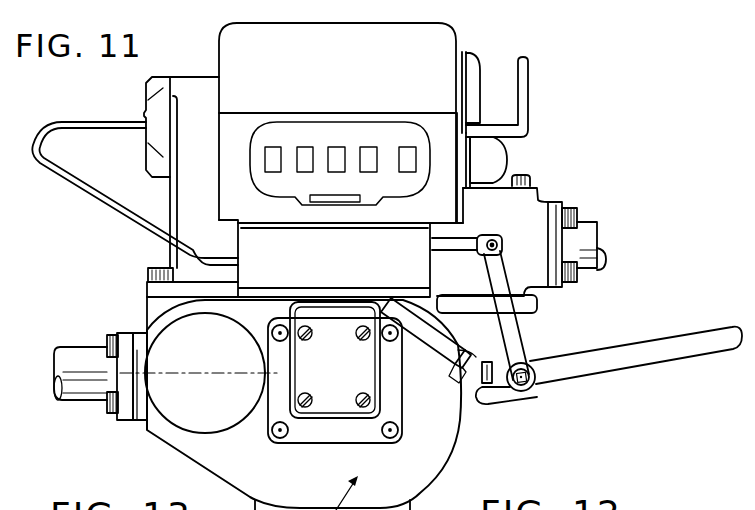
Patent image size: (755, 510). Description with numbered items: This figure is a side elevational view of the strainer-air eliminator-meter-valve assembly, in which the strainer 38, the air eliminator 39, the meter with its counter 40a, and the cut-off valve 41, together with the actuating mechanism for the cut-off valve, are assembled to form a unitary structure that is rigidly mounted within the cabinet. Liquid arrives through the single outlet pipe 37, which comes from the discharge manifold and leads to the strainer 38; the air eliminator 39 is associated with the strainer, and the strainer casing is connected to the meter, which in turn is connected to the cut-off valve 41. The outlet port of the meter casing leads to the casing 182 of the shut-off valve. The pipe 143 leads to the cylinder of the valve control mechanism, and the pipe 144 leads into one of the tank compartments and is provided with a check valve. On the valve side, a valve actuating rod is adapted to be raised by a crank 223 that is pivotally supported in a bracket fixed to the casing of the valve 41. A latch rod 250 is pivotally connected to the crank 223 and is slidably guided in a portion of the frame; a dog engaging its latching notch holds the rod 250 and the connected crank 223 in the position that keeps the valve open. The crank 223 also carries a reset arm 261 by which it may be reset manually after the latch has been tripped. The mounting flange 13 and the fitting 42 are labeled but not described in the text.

The mounting flange plate 13 is at (269, 372).
The outlet pipe 37 is at (72, 353).
The strainer 38 is at (188, 409).
The air eliminator 39 is at (192, 192).
The counter 40a is at (440, 48).
The cut-off valve 41 is at (507, 214).
The connector fitting 42 is at (596, 233).
The pipe 143 is at (118, 130).
The pipe 144 is at (525, 105).
The casing 182 is at (452, 336).
The crank 223 is at (513, 333).
The latch rod 250 is at (453, 252).
The reset arm 261 is at (650, 348).